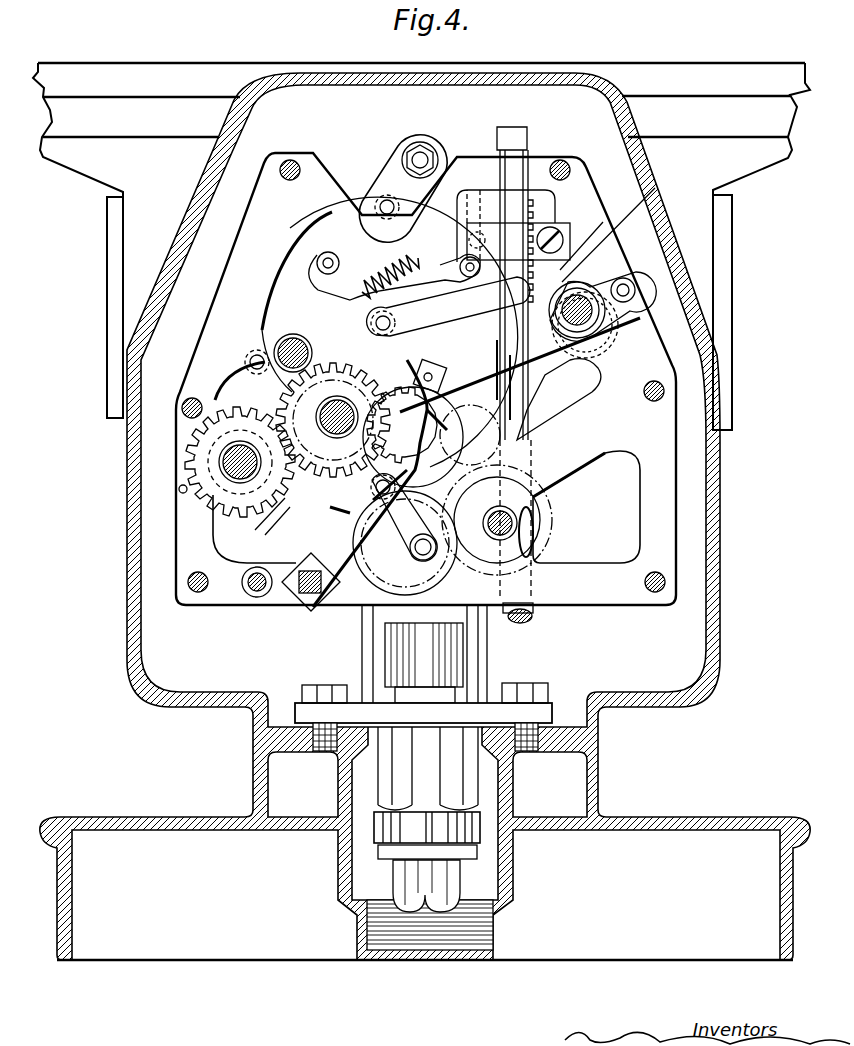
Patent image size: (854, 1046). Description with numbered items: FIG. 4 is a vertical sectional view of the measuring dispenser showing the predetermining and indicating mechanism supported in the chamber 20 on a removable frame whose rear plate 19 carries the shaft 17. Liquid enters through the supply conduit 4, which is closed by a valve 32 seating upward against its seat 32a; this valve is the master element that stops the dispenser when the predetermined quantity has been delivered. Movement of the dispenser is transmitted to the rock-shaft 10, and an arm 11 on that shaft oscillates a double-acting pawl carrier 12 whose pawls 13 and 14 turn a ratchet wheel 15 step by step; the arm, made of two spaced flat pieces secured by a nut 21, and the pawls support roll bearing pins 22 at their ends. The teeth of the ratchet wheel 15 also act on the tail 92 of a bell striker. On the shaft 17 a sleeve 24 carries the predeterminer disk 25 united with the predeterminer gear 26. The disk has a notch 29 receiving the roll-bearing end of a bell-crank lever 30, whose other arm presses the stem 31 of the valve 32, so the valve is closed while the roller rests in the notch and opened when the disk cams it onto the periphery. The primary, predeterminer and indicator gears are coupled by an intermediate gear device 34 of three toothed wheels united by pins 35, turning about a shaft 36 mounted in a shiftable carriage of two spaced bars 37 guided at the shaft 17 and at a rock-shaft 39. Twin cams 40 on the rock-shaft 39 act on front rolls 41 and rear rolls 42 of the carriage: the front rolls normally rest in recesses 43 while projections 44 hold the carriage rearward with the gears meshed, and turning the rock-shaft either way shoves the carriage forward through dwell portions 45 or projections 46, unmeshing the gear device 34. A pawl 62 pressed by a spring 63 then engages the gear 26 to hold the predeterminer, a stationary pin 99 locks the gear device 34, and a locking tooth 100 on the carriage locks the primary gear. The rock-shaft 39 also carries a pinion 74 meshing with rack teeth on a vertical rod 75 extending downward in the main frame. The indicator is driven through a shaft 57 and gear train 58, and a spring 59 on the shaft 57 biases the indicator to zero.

The supply conduit 4 is at (352, 845).
The rock-shaft 10 is at (421, 150).
The arm 11 is at (393, 164).
The double-acting pawl carrier 12 is at (335, 226).
The pawl 13 is at (314, 287).
The pawl 14 is at (462, 287).
The ratchet wheel 15 is at (403, 325).
The shaft 17 is at (334, 426).
The rear plate 19 is at (221, 607).
The chamber 20 is at (692, 512).
The nut 21 is at (436, 152).
The roll bearing pins 22 is at (385, 217).
The sleeve 24 is at (344, 409).
The predeterminer disk 25 is at (282, 508).
The predeterminer gear 26 is at (350, 372).
The notch 29 is at (408, 472).
The bell-crank lever 30 is at (325, 540).
The stem 31 is at (358, 604).
The valve 32 is at (482, 856).
The seat 32a is at (381, 852).
The intermediate gear device 34 is at (185, 456).
The pins 35 is at (222, 477).
The shaft 36 is at (212, 512).
The carriage plates 37 is at (463, 368).
The rock-shaft 39 is at (612, 342).
The twin cams 40 is at (583, 272).
The front rolls 41 is at (538, 350).
The rear rolls 42 is at (635, 283).
The recesses 43 is at (504, 300).
The projections 44 is at (645, 308).
The dwell portions 45 is at (655, 198).
The projections 46 is at (560, 400).
The shaft 57 is at (520, 522).
The gear train 58 is at (440, 560).
The spring 59 is at (535, 500).
The one-way-acting pawl 62 is at (330, 345).
The spring 63 is at (237, 383).
The pinion 74 is at (642, 391).
The rod 75 is at (535, 616).
The tail 92 is at (256, 598).
The stationary pin 99 is at (178, 493).
The locking dog 100 is at (430, 368).